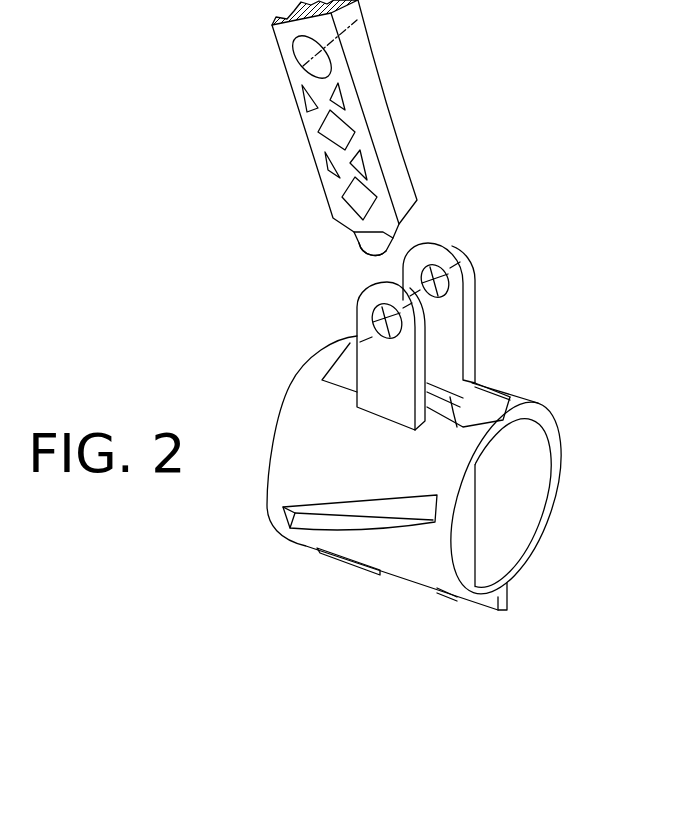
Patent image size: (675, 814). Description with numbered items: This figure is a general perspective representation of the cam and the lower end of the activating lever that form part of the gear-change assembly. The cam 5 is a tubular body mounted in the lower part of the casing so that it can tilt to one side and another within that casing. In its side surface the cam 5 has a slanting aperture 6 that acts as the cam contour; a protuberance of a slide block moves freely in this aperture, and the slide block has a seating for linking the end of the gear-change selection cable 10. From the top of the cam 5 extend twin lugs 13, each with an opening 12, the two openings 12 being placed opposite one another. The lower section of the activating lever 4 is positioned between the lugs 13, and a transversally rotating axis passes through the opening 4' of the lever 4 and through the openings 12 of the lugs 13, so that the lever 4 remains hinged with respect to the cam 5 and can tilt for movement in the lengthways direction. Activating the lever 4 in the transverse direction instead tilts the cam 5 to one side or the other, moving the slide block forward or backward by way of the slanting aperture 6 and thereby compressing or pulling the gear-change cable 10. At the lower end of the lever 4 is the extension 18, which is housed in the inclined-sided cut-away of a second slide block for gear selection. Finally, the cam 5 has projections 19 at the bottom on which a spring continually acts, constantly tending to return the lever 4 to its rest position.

The gear-change selection cable 10 is at (458, 33).
The activating lever 4 is at (325, 127).
The opening of the lever 4' is at (275, 63).
The extension 18 is at (363, 248).
The cam 5 is at (407, 553).
The slanting aperture 6 is at (348, 526).
The projections 19 is at (349, 565).
The twin lugs 13 is at (463, 340).
The openings of the lugs 12 is at (380, 316).